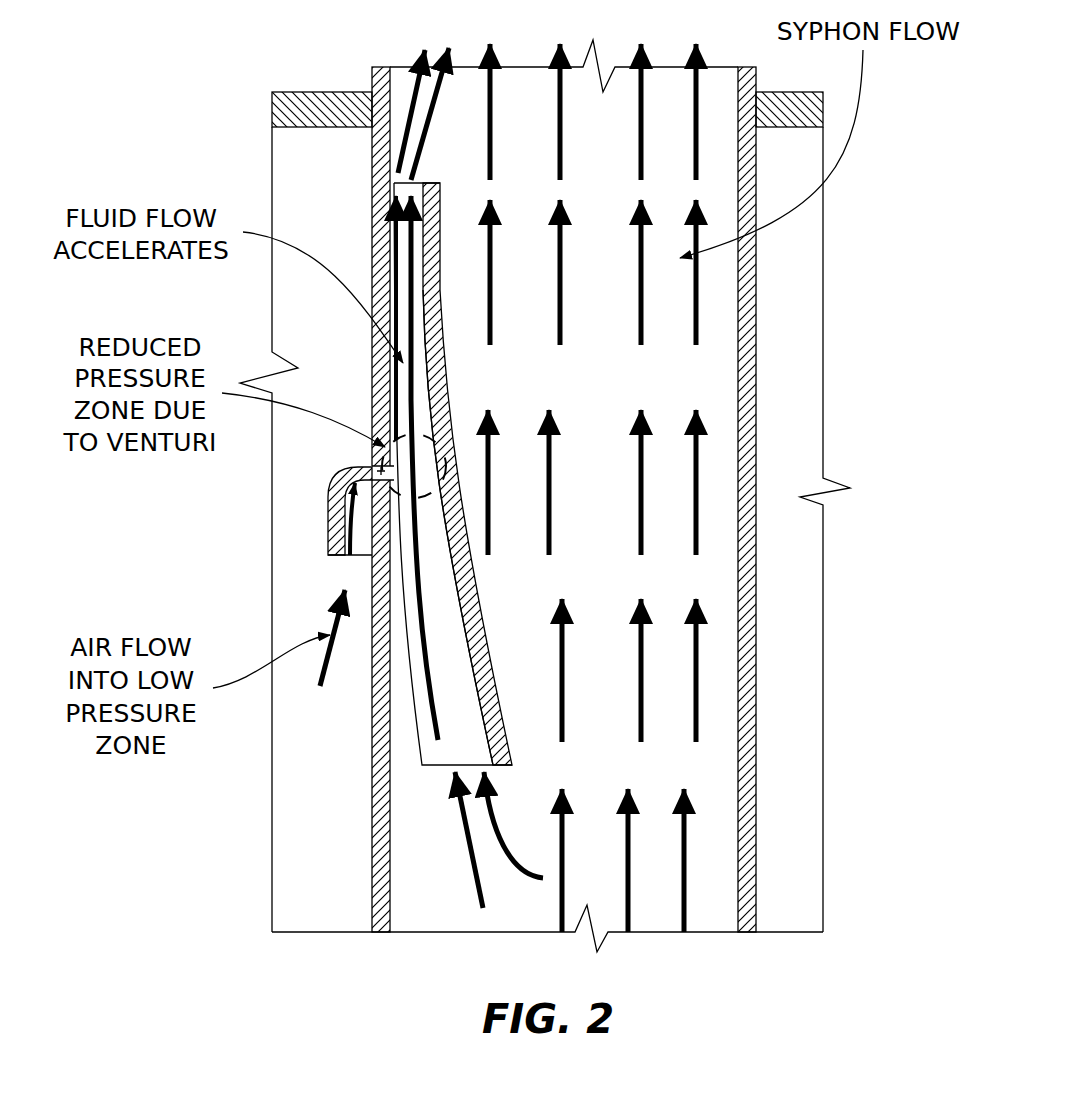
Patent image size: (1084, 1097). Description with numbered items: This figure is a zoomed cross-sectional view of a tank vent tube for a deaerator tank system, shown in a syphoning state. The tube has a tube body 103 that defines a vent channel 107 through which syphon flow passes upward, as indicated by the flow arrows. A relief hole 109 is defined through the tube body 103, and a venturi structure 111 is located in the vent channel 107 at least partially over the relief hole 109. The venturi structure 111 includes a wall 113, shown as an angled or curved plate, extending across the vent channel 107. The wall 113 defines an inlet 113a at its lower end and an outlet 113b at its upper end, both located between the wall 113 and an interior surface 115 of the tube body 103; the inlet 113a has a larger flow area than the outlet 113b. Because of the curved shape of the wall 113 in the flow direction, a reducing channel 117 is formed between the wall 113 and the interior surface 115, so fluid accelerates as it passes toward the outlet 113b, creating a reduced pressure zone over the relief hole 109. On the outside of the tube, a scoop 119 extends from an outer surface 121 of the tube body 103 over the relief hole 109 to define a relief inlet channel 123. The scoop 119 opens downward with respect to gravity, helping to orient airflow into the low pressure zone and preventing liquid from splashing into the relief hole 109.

The tube body 103 is at (748, 345).
The vent channel 107 is at (697, 573).
The relief hole 109 is at (380, 458).
The venturi structure 111 is at (458, 382).
The wall 113 is at (473, 648).
The inlet 113a is at (426, 775).
The outlet 113b is at (413, 188).
The interior surface 115 is at (395, 735).
The reducing channel 117 is at (433, 545).
The scoop 119 is at (340, 512).
The outer surface 121 is at (372, 698).
The relief inlet channel 123 is at (343, 540).